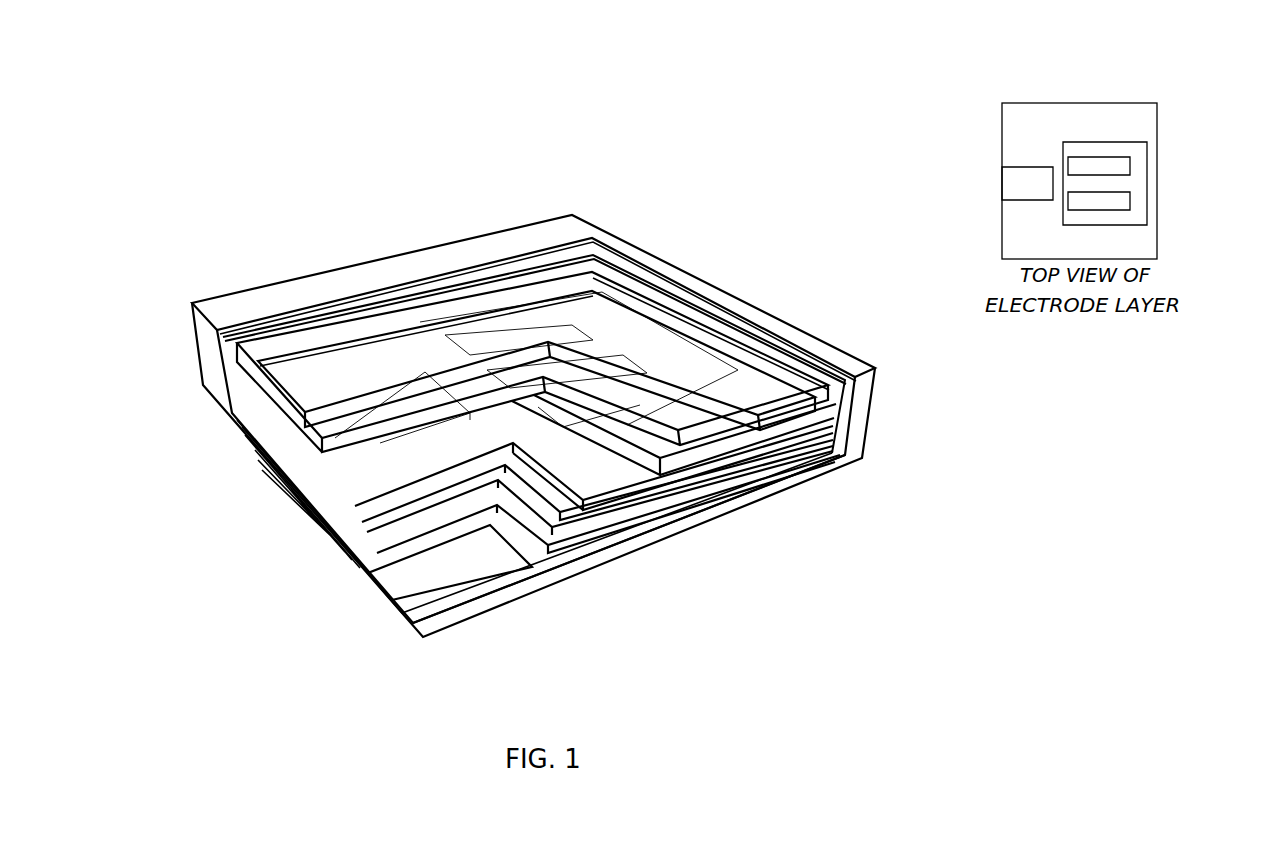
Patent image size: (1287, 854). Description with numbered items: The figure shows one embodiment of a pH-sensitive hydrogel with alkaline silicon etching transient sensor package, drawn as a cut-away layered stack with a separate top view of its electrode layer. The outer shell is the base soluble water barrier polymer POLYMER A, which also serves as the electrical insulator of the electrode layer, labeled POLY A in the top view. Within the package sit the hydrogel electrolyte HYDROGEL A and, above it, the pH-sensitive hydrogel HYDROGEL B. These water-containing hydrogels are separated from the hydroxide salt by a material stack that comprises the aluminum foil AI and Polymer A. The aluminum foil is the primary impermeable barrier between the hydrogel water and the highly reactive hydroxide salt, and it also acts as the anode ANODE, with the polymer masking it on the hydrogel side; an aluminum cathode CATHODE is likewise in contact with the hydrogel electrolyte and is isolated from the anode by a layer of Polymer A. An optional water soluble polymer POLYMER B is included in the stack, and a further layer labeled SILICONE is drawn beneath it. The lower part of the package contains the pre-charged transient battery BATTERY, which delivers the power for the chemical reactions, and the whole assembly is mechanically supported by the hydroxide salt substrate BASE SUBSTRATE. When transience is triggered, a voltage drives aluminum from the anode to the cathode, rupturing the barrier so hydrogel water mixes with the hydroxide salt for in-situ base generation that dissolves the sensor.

The base soluble water barrier polymer POLYMER A is at (200, 326).
The aluminum anode ANODE is at (630, 325).
The aluminum cathode CATHODE is at (323, 432).
The pH-sensitive hydrogel HYDROGEL B is at (808, 392).
The hydrogel electrolyte HYDROGEL A is at (760, 434).
The water soluble polymer POLYMER B is at (373, 562).
The battery BATTERY is at (423, 593).
The silicone layer SILICONE is at (530, 547).
The hydroxide salt substrate BASE SUBSTRATE is at (577, 537).
The aluminum foil AI is at (612, 543).
The Polymer A POLY A is at (1079, 181).